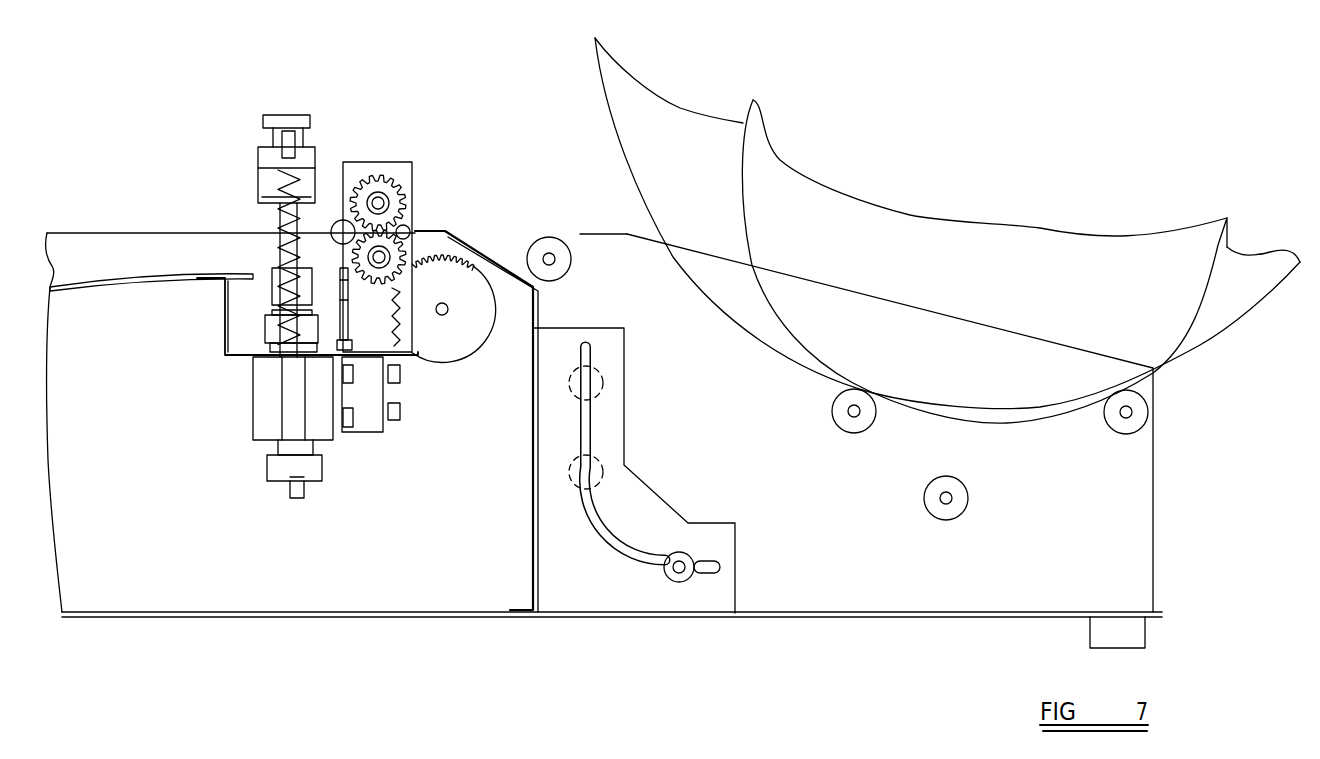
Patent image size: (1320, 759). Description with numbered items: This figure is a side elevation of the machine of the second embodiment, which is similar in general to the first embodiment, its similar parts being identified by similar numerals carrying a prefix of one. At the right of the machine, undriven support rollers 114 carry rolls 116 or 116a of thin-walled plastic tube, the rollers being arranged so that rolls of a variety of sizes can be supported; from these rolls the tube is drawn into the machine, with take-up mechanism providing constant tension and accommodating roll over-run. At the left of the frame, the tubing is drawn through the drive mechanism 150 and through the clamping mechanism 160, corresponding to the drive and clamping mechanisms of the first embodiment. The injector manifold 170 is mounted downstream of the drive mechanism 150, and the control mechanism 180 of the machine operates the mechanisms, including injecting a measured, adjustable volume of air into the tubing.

The undriven support rollers 114 is at (1149, 404).
The roll 116 is at (1200, 313).
The roll 116a is at (1253, 313).
The drive mechanism 150 is at (374, 160).
The clamping mechanism 160 is at (290, 115).
The injector manifold 170 is at (348, 326).
The control mechanism 180 is at (352, 433).